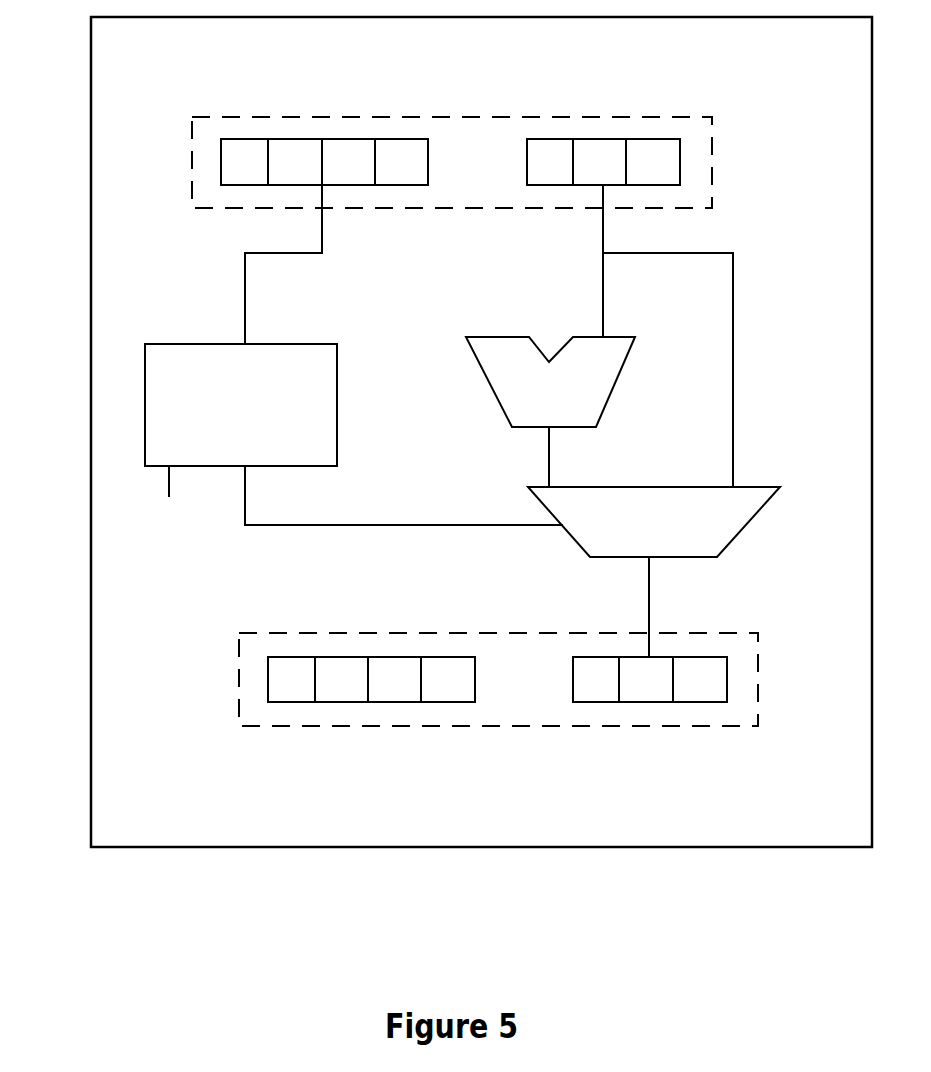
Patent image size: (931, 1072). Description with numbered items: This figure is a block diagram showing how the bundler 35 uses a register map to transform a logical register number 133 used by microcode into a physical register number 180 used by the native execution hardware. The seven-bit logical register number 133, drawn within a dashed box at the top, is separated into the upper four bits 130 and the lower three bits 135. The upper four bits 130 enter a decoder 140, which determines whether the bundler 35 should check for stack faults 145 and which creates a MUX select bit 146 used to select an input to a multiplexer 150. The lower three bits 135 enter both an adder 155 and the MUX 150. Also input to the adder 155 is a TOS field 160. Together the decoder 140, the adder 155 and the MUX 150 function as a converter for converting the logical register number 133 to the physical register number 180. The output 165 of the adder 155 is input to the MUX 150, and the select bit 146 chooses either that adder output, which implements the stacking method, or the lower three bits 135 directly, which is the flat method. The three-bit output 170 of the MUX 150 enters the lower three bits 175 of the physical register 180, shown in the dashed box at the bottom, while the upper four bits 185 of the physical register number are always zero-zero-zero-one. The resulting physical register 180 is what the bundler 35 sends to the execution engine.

The bundler 35 is at (91, 558).
The upper 4 bits 130 is at (352, 139).
The logical register number 133 is at (712, 160).
The lower 3 bits 135 is at (603, 139).
The decoder 140 is at (241, 405).
The stack faults 145 is at (167, 491).
The MUX select bit 146 is at (368, 525).
The multiplexer 150 is at (654, 522).
The adder 155 is at (550, 382).
The TOS field 160 is at (534, 261).
The output of the adder 165 is at (549, 457).
The 3-bit output of the MUX 170 is at (649, 602).
The lower 3 bits of physical register 175 is at (688, 702).
The physical register number 180 is at (758, 677).
The upper 4 bits of physical register number 185 is at (407, 702).